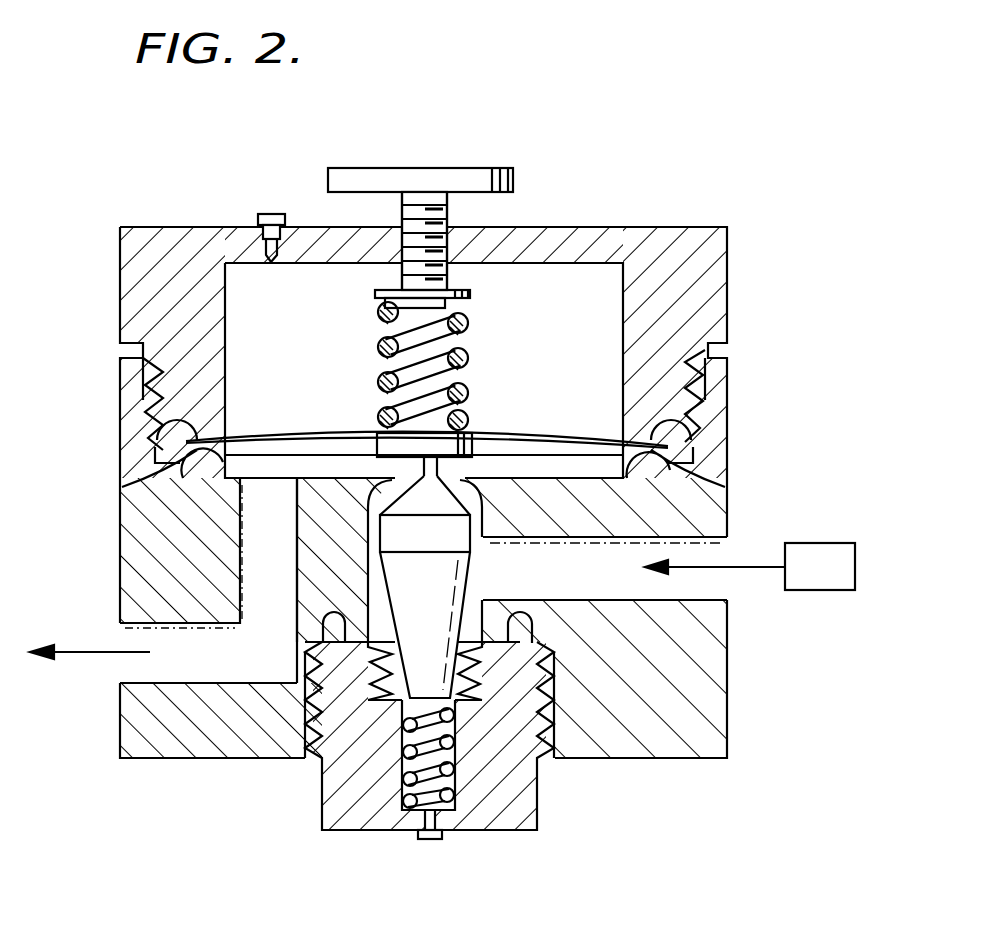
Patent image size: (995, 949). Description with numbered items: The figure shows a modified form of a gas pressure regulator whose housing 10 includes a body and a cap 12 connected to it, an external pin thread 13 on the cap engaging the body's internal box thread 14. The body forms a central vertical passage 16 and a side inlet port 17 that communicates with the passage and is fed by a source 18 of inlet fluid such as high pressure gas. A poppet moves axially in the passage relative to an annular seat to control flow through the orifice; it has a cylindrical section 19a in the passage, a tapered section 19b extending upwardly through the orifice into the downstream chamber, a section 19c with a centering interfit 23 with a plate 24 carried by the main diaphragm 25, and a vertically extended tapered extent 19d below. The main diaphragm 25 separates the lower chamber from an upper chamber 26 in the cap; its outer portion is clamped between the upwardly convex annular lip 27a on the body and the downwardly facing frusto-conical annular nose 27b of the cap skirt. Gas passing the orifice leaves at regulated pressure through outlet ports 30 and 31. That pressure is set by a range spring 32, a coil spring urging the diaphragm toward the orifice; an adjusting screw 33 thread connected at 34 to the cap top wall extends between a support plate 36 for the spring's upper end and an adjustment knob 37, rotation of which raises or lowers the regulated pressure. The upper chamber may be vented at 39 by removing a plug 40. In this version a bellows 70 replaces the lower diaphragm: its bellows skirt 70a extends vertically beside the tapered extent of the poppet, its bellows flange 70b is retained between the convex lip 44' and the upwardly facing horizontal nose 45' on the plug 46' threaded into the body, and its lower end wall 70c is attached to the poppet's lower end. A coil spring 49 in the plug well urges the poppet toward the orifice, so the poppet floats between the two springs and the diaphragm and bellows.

The housing 10 is at (758, 512).
The cap 12 is at (727, 258).
The external pin thread 13 is at (697, 392).
The internal box thread 14 is at (698, 418).
The central vertical passage 16 is at (535, 707).
The side inlet port 17 is at (592, 542).
The source of inlet fluid 18 is at (810, 580).
The cylindrical section 19a is at (425, 515).
The tapered section 19b is at (368, 508).
The poppet section 19c is at (415, 634).
The vertically extended tapered extent 19d is at (397, 780).
The centering interfit 23 is at (405, 485).
The plate 24 is at (472, 445).
The main diaphragm 25 is at (576, 436).
The upper chamber 26 is at (424, 370).
The annular lip 27a is at (170, 432).
The annular nose 27b is at (168, 470).
The outlet port 30 is at (262, 522).
The outlet port 31 is at (162, 670).
The range spring 32 is at (470, 352).
The adjusting screw 33 is at (447, 205).
The thread connection 34 is at (448, 240).
The support plate 36 is at (375, 294).
The adjustment knob 37 is at (485, 168).
The vent 39 is at (272, 242).
The plug 40 is at (272, 214).
The convex lip 44' is at (210, 646).
The horizontal nose 45' is at (391, 595).
The plug 46' is at (446, 855).
The coil spring 49 is at (455, 790).
The bellows 70 is at (320, 717).
The bellows skirt 70a is at (540, 668).
The bellows flange 70b is at (382, 630).
The bellows lower end wall 70c is at (458, 703).